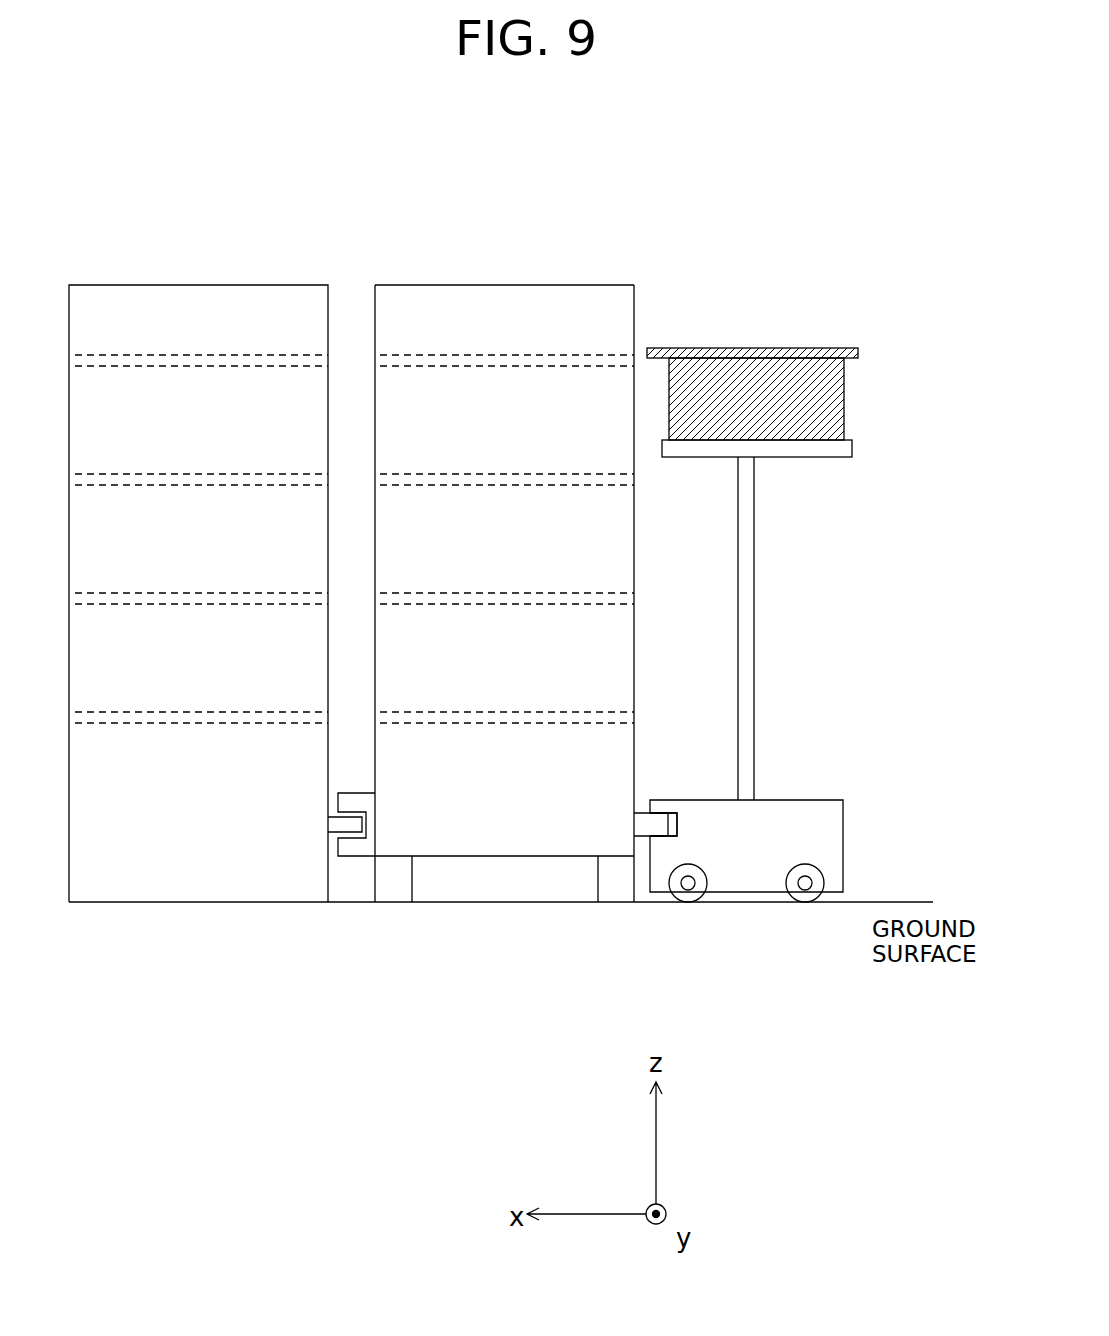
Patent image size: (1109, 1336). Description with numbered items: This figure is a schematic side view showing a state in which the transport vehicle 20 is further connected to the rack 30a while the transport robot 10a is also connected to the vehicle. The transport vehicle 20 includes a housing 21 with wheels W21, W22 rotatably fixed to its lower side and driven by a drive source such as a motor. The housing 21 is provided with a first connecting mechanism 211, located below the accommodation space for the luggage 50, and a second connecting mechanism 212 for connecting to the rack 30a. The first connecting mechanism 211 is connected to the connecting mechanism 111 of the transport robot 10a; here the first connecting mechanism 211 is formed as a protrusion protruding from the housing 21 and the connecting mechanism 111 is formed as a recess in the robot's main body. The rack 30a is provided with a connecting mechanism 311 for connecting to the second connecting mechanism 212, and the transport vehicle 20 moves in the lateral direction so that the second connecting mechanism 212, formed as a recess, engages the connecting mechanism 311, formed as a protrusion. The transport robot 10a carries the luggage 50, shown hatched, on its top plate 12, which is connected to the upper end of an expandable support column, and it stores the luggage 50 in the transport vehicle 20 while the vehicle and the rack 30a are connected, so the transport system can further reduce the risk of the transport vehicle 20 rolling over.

The rack 30a is at (199, 207).
The transport vehicle 20 is at (495, 207).
The housing 21 is at (556, 285).
The transport robot 10a is at (762, 300).
The luggage 50 is at (845, 418).
The top plate 12 is at (808, 458).
The connecting mechanism 311 is at (325, 823).
The second connecting mechanism 212 is at (382, 831).
The first connecting mechanism 211 is at (635, 823).
The connecting mechanism 111 is at (678, 835).
The wheel W21 is at (397, 883).
The wheel W22 is at (560, 920).